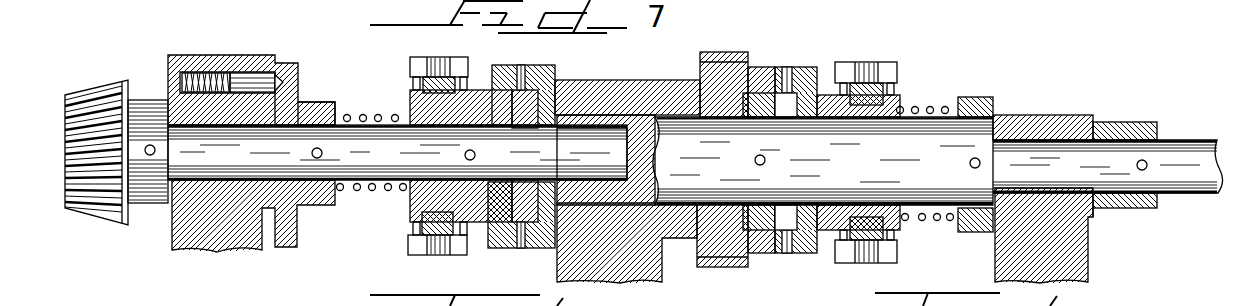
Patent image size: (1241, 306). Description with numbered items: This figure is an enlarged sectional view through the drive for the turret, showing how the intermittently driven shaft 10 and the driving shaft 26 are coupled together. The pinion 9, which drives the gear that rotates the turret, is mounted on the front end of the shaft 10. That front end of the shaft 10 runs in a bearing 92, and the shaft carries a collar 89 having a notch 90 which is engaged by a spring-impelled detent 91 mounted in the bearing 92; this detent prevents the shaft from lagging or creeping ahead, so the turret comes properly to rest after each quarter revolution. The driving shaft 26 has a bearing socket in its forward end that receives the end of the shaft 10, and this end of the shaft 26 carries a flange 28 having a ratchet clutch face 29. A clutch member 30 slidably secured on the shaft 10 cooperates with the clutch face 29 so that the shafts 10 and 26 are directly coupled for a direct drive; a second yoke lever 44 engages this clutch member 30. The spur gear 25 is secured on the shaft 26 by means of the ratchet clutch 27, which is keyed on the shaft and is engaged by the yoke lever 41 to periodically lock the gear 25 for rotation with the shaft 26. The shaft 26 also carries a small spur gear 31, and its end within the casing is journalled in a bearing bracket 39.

The pinion 9 is at (110, 94).
The shaft 10 is at (278, 147).
The spur gear 25 is at (724, 70).
The driving shaft 26 is at (926, 143).
The clutch 27 is at (822, 60).
The flange 28 is at (557, 69).
The ratchet clutch face 29 is at (524, 246).
The clutch member 30 is at (433, 181).
The small spur gear 31 is at (1121, 134).
The bearing bracket 39 is at (1027, 128).
The yoke lever 41 is at (870, 90).
The second yoke lever 44 is at (436, 216).
The collar 89 is at (337, 108).
The notch 90 is at (292, 66).
The spring-impelled detent 91 is at (253, 78).
The bearing 92 is at (243, 232).